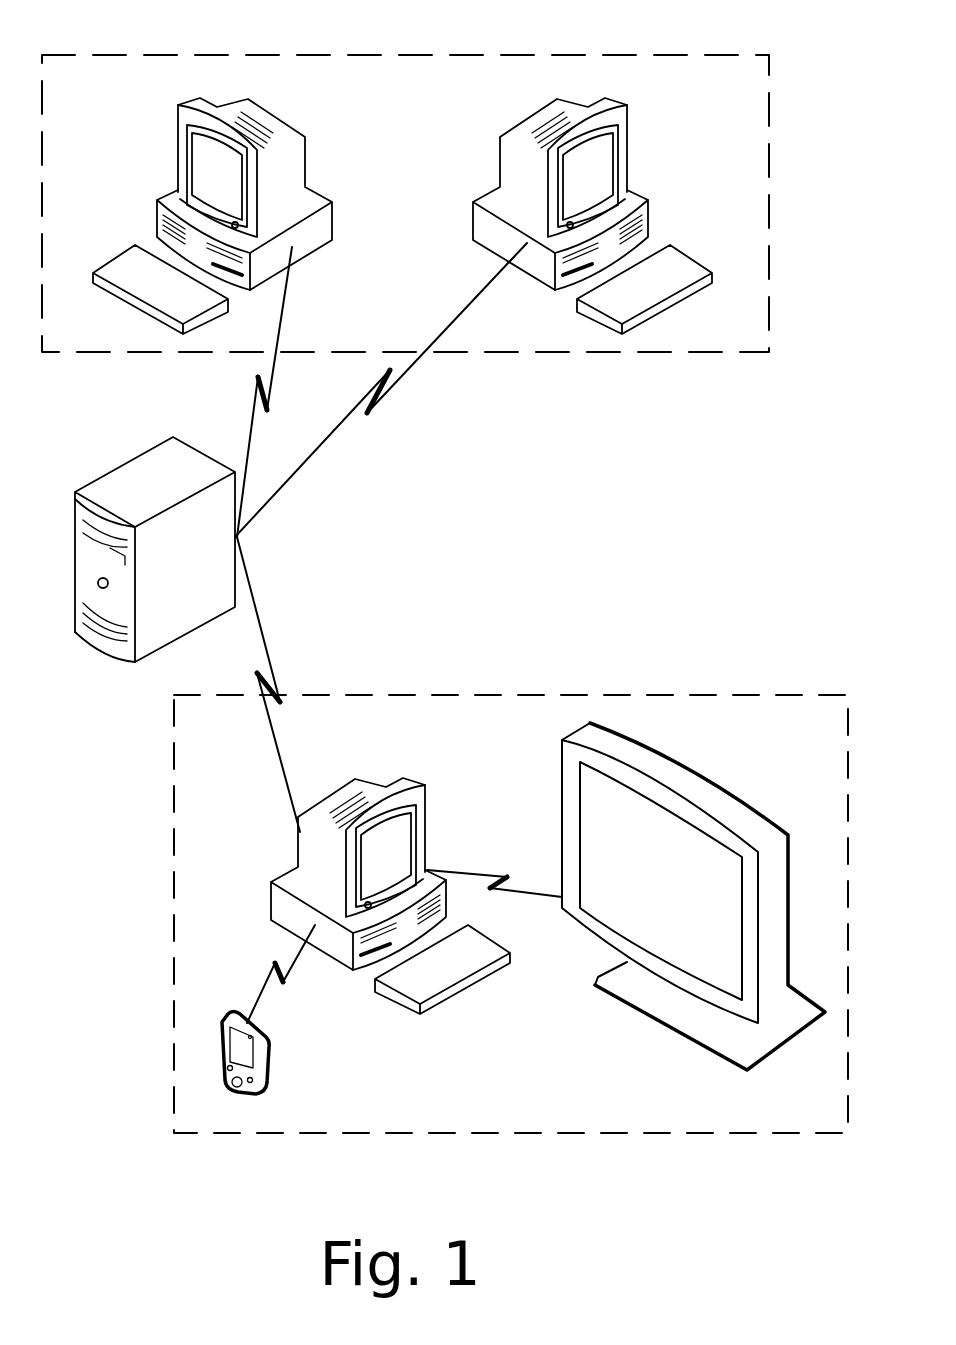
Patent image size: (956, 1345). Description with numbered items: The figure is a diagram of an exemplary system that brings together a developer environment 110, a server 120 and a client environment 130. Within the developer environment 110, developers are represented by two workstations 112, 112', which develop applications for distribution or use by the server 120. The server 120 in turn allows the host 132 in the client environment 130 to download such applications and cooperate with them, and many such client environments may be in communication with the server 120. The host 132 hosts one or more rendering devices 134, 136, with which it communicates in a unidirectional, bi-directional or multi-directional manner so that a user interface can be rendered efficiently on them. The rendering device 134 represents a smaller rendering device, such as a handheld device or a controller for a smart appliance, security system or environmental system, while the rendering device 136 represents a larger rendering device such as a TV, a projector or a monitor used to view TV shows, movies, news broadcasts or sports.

The developer environment 110 is at (275, 53).
The workstation 112 is at (212, 199).
The workstation 112' is at (567, 214).
The server 120 is at (107, 473).
The client environment 130 is at (503, 695).
The host 132 is at (275, 880).
The rendering device 134 is at (266, 1038).
The rendering device 136 is at (562, 783).